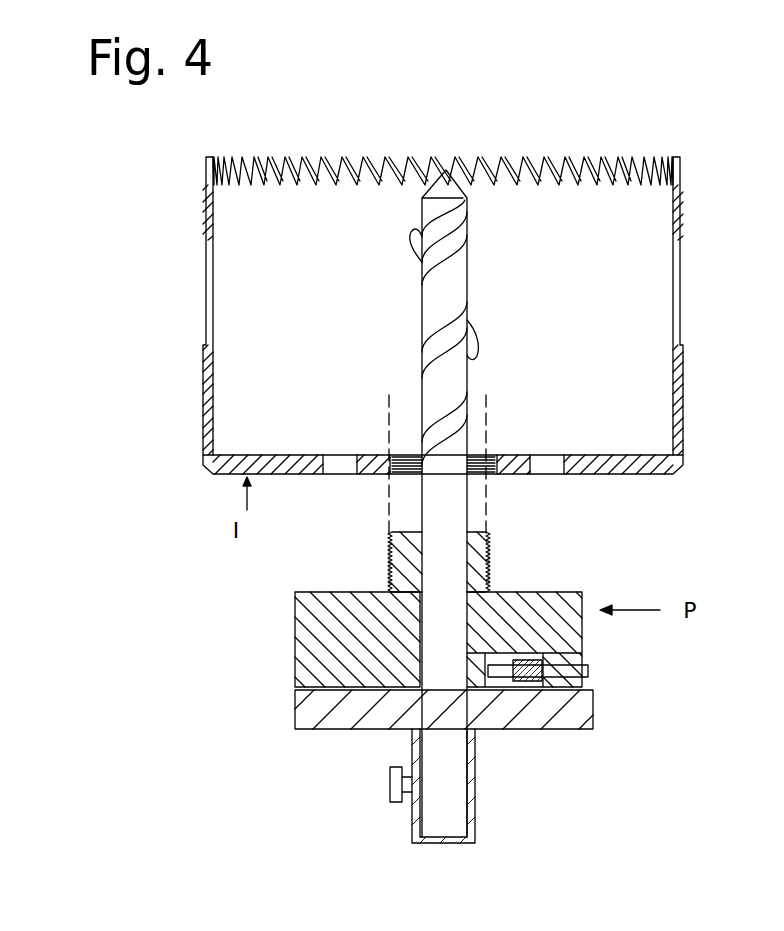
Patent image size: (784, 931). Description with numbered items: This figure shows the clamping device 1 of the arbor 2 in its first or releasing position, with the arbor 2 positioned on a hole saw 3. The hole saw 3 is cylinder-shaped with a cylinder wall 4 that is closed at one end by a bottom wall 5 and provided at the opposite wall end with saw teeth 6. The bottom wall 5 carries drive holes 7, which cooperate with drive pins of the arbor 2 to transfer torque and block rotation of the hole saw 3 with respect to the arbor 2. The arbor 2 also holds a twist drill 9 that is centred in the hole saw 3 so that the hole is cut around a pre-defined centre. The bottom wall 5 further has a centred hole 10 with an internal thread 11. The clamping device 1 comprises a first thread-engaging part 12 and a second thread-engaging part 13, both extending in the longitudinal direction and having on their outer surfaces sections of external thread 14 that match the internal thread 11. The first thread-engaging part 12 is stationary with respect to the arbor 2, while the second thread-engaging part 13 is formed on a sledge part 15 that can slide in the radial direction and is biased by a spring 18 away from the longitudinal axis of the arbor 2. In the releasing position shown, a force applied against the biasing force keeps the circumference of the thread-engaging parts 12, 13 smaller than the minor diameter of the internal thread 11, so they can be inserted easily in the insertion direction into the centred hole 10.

The clamping device 1 is at (413, 698).
The arbor 2 is at (476, 735).
The hole saw 3 is at (482, 311).
The cylinder wall 4 is at (678, 380).
The bottom wall 5 is at (443, 491).
The saw teeth 6 is at (592, 166).
The drive holes 7 is at (338, 466).
The twist drill 9 is at (445, 815).
The centred hole 10 is at (476, 475).
The internal thread 11 is at (407, 466).
The first thread-engaging part 12 is at (394, 545).
The second thread-engaging part 13 is at (487, 536).
The external thread 14 is at (392, 580).
The sledge part 15 is at (558, 606).
The spring 18 is at (530, 675).